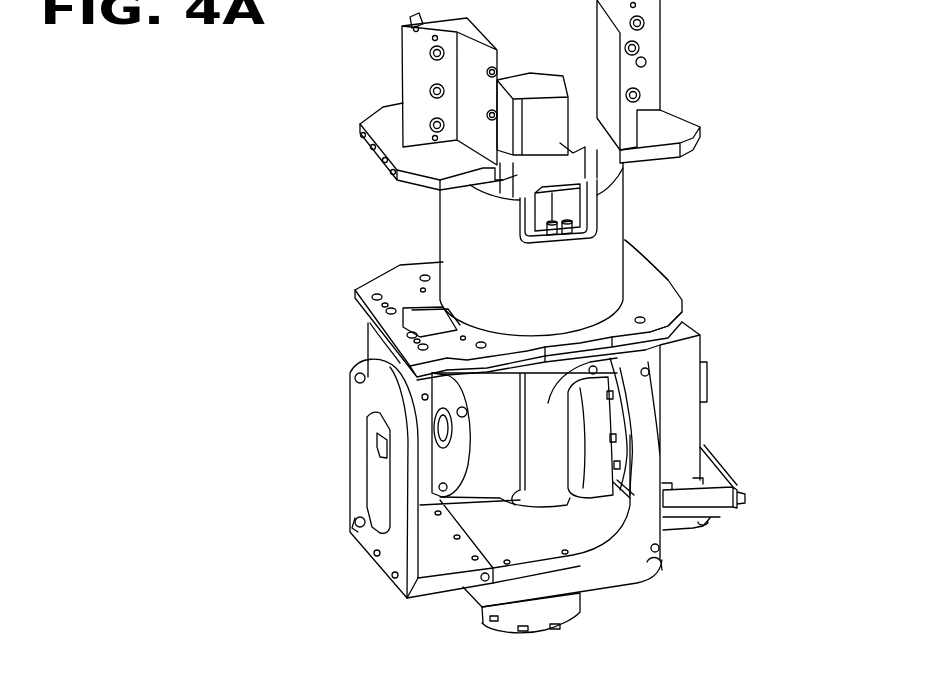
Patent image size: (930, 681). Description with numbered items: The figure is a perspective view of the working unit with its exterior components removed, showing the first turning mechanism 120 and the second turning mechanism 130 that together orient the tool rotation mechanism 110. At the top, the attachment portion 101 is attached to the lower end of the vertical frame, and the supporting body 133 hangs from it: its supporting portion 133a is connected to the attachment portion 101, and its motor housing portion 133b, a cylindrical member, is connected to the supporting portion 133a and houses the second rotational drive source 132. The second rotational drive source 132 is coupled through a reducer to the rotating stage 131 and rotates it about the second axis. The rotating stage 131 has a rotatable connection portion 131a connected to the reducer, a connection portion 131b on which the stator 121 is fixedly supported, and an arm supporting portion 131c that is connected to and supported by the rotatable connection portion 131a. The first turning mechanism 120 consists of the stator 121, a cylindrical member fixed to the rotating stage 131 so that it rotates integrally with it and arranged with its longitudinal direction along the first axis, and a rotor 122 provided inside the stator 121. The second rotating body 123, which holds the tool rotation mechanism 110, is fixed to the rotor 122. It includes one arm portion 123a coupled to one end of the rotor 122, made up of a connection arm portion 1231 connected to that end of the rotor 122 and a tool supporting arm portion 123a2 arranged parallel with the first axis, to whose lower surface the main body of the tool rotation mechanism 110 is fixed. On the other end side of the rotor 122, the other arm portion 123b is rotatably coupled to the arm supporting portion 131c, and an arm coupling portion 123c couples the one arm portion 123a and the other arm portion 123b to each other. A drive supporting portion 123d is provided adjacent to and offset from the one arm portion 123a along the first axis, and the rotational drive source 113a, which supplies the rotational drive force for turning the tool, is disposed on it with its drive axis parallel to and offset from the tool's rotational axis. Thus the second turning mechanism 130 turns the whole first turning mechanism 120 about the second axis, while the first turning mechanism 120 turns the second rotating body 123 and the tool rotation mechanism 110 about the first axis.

The attachment portion 101 is at (652, 70).
The tool rotation mechanism 110 is at (570, 605).
The rotational drive source 113a is at (688, 395).
The first turning mechanism 120 is at (336, 454).
The stator 121 is at (597, 463).
The rotor 122 is at (440, 432).
The second rotating body 123 is at (455, 620).
The one arm portion 123a is at (660, 562).
The tool supporting arm portion 123a2 is at (533, 585).
The other arm portion 123b is at (395, 545).
The arm coupling portion 123c is at (447, 582).
The drive supporting portion 123d is at (700, 482).
The connection arm portion 1231 is at (647, 430).
The second turning mechanism 130 is at (370, 229).
The rotating stage 131 is at (724, 240).
The rotatable connection portion 131a is at (643, 305).
The connection portion 131b is at (672, 347).
The arm supporting portion 131c is at (390, 355).
The second rotational drive source 132 is at (527, 126).
The supporting body 133 is at (752, 75).
The supporting portion 133a is at (680, 128).
The motor housing portion 133b is at (615, 208).